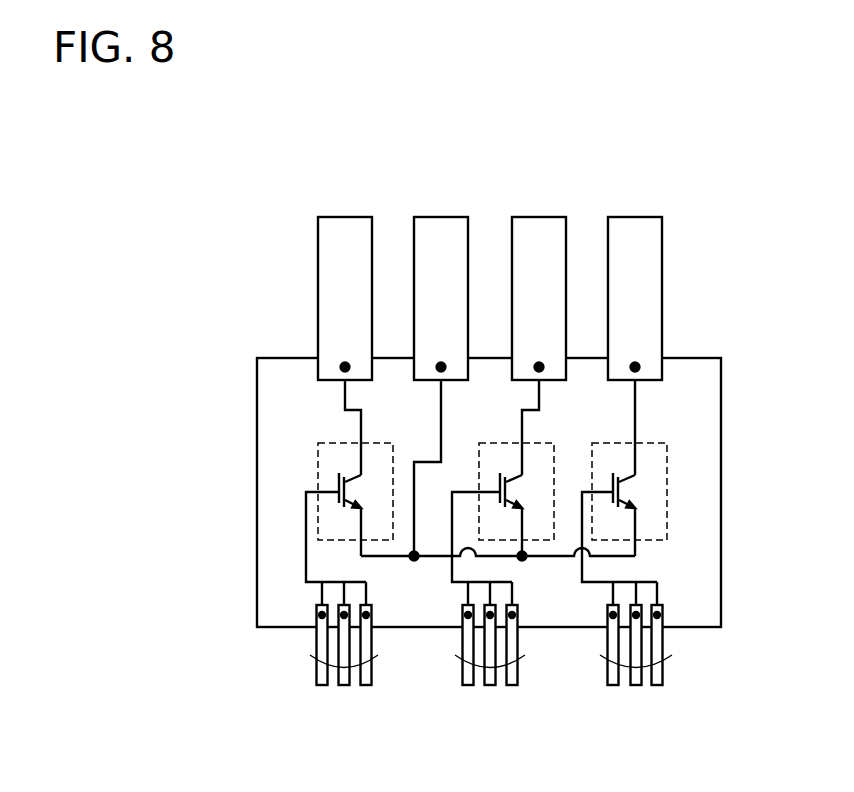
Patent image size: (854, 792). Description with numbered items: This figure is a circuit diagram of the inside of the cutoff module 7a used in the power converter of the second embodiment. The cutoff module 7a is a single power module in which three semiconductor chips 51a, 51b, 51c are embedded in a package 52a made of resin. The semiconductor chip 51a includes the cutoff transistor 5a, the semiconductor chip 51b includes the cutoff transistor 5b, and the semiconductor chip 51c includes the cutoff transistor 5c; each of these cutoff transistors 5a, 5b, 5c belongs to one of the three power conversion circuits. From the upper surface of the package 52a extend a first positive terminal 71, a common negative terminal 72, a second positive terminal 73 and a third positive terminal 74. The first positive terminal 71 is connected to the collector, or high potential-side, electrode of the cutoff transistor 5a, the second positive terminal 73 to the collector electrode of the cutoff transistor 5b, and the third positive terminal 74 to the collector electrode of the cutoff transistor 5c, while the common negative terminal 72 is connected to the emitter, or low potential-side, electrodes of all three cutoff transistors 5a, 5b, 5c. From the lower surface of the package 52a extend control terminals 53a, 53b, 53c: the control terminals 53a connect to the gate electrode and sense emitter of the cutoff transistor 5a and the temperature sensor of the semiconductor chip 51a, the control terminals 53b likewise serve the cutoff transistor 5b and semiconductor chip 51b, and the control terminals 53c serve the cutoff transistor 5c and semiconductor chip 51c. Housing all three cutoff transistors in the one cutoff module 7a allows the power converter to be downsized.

The cutoff module 7a is at (259, 330).
The package 52a is at (697, 367).
The first positive terminal 71 is at (349, 226).
The common negative terminal 72 is at (445, 226).
The second positive terminal 73 is at (543, 226).
The third positive terminal 74 is at (640, 226).
The cutoff transistor 5a is at (337, 478).
The cutoff transistor 5b is at (498, 480).
The cutoff transistor 5c is at (612, 479).
The semiconductor chip 51a is at (337, 443).
The semiconductor chip 51b is at (540, 560).
The semiconductor chip 51c is at (668, 466).
The control terminals 53a is at (310, 657).
The control terminals 53b is at (455, 657).
The control terminals 53c is at (672, 657).